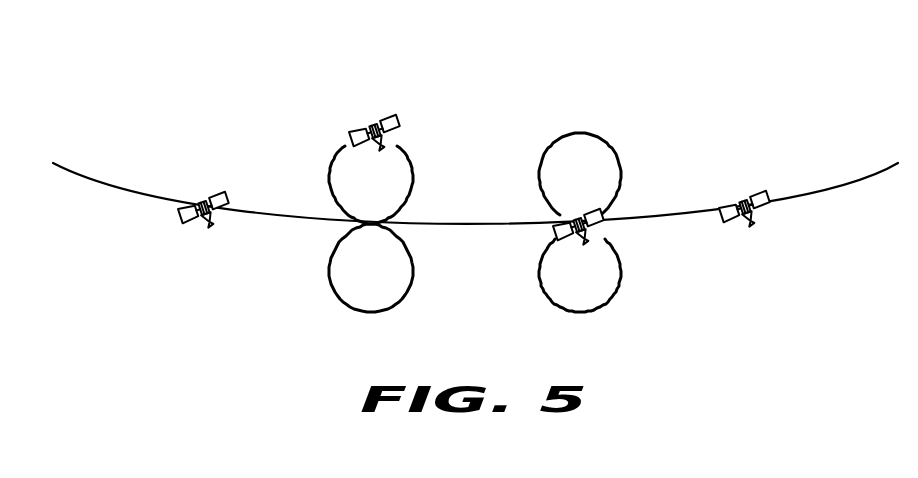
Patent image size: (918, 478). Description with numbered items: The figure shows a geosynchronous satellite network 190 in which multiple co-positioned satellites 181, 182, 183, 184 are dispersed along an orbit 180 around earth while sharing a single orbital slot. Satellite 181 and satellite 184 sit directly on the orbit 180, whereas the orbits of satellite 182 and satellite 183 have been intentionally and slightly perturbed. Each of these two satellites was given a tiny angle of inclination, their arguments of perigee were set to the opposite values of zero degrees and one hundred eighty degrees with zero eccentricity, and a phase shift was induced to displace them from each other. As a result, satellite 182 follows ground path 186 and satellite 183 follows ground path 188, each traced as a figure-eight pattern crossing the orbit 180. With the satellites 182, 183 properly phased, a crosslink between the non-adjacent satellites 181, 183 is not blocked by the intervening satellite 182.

The orbit 180 is at (117, 187).
The satellite 181 is at (188, 219).
The satellite 182 is at (384, 121).
The satellite 183 is at (592, 214).
The satellite 184 is at (765, 208).
The ground path 186 is at (368, 314).
The ground path 188 is at (579, 313).
The geosynchronous satellite network 190 is at (291, 379).